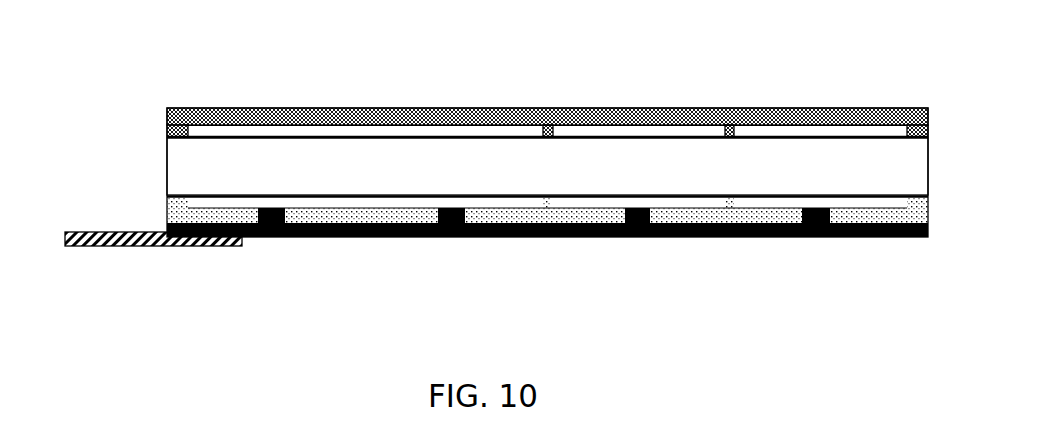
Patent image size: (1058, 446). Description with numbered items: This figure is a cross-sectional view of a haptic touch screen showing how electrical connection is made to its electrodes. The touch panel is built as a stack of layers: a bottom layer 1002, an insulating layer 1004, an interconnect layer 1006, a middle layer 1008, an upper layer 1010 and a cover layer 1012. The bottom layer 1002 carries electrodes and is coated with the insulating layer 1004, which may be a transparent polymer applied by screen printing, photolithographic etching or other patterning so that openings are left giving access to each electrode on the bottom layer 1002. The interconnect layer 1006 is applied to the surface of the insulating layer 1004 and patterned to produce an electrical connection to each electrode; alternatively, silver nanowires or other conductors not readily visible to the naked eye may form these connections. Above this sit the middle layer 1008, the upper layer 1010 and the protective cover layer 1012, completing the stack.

The bottom layer 1002 is at (327, 198).
The insulating layer 1004 is at (547, 212).
The interconnect layer 1006 is at (637, 223).
The middle layer 1008 is at (170, 157).
The upper layer 1010 is at (252, 130).
The cover layer 1012 is at (412, 117).